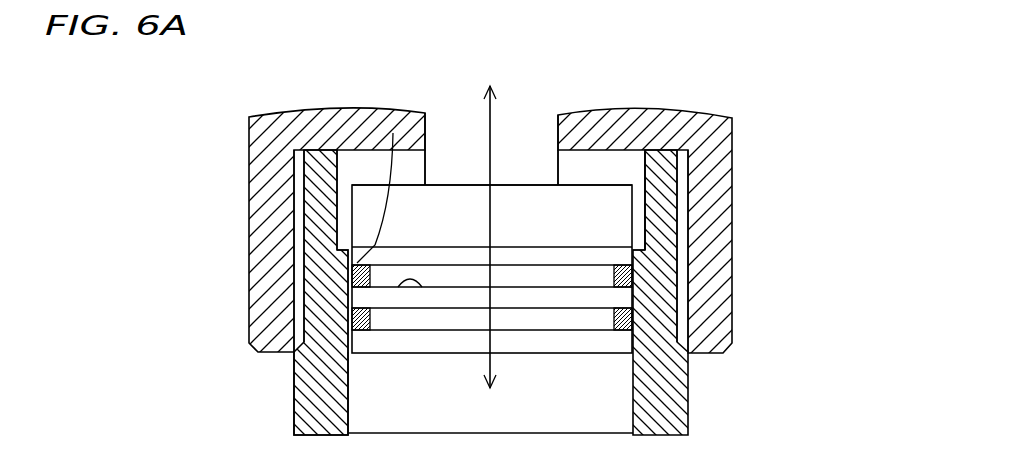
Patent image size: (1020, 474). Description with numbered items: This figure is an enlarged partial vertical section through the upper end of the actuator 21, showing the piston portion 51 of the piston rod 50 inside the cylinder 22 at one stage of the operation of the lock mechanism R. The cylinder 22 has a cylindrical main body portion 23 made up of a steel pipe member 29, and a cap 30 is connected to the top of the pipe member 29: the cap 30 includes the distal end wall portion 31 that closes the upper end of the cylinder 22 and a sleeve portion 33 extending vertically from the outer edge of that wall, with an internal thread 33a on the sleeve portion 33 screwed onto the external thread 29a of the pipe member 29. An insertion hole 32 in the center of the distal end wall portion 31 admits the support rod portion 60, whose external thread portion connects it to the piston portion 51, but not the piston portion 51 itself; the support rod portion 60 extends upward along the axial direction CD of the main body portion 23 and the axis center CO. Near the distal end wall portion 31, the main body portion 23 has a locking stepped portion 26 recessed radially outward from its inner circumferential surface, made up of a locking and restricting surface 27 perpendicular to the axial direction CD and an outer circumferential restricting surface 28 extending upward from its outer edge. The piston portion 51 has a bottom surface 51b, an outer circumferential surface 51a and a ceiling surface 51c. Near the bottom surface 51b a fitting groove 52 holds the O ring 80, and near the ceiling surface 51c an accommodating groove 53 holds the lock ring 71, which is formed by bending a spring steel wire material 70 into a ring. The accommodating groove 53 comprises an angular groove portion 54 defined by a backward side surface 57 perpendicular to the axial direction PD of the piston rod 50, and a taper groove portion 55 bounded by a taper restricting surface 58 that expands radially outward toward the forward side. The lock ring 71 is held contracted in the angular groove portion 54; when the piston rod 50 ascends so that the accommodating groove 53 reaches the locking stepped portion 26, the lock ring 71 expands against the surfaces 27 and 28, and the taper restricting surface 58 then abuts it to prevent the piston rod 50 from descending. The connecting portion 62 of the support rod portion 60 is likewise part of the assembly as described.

The actuator 21 is at (138, 214).
The cylinder 22 is at (228, 301).
The main body portion 23 is at (256, 402).
The steel pipe member 29 is at (318, 412).
The locking stepped portion 26 is at (350, 216).
The locking and restricting surface 27 is at (350, 255).
The outer circumferential restricting surface 28 is at (305, 247).
The external thread 29a is at (777, 216).
The internal thread 33a is at (683, 160).
The cap 30 is at (258, 138).
The distal end wall portion 31 is at (250, 347).
The insertion hole 32 is at (422, 115).
The sleeve portion 33 is at (717, 170).
The piston portion 51 is at (542, 329).
The piston rod 50 is at (575, 368).
The piston portion 51a is at (435, 343).
The bottom surface 51b is at (466, 356).
The ceiling surface 51c is at (595, 187).
The fitting groove 52 is at (540, 320).
The accommodating groove 53 is at (735, 200).
The angular groove portion 54 is at (633, 243).
The taper groove portion 55 is at (633, 220).
The backward side surface 57 is at (397, 295).
The taper restricting surface 58 is at (432, 253).
The support rod portion 60 is at (539, 116).
The opening 62 is at (528, 148).
The lock ring 71 is at (595, 280).
The wire material 70 is at (625, 278).
The O ring 80 is at (625, 322).
The lock mechanism R is at (833, 195).
The axial direction of the piston rod PD is at (490, 230).
The axis center CO is at (450, 218).
The axial direction of the main body portion CD is at (450, 218).